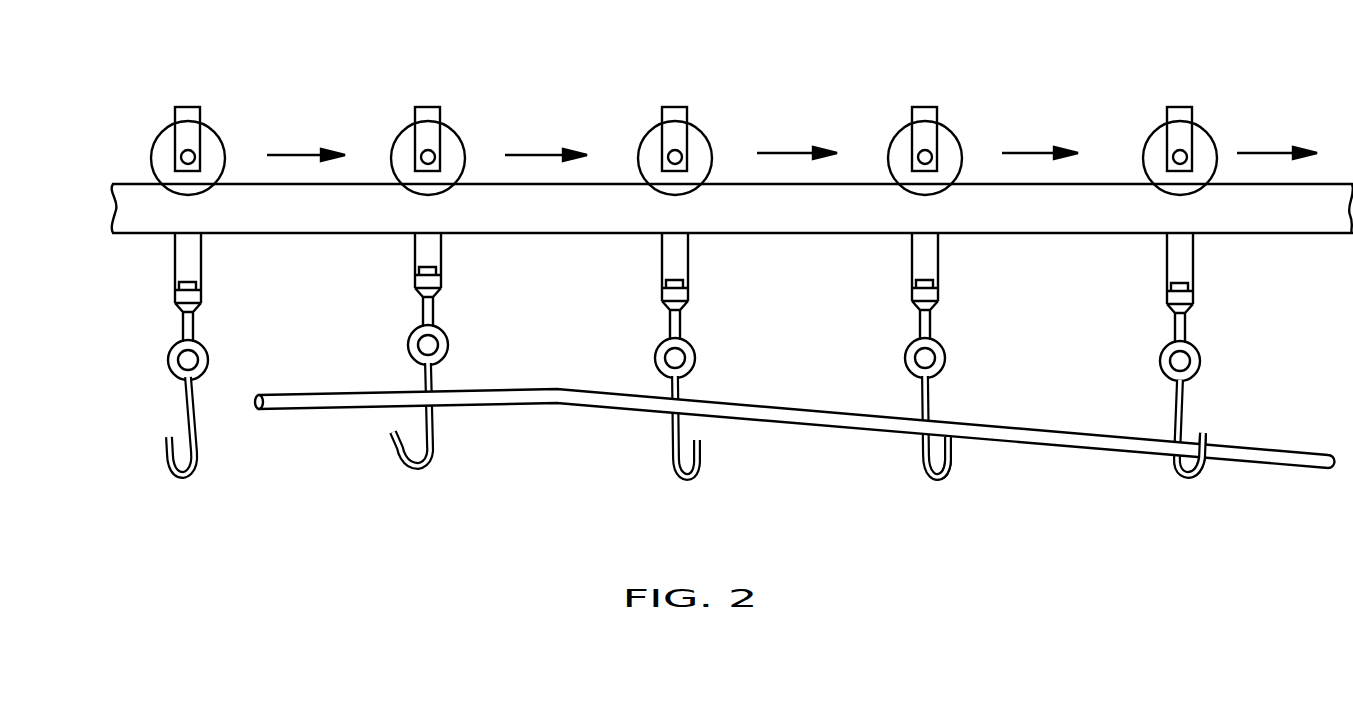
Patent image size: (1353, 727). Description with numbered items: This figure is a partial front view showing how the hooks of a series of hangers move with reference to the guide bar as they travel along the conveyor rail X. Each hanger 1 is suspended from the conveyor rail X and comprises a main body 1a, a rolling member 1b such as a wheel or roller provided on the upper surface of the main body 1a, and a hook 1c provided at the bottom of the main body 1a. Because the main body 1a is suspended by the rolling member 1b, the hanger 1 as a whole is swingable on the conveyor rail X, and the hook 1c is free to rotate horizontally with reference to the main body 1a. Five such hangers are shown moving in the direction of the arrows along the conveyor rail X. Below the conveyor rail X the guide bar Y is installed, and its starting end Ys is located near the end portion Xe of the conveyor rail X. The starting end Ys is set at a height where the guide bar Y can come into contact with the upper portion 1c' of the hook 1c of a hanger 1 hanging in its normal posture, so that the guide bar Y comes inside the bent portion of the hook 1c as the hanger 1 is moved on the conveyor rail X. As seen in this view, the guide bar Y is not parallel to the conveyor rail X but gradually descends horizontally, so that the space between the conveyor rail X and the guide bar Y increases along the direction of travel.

The hanger 1 is at (148, 66).
The main body 1a is at (176, 252).
The rolling member 1b is at (213, 142).
The hook 1c is at (158, 426).
The upper portion of the hook 1c' is at (447, 413).
The conveyor rail X is at (113, 208).
The end portion of the conveyor rail Xe is at (1093, 193).
The guide bar Y is at (308, 403).
The starting end of the guide bar Ys is at (267, 412).